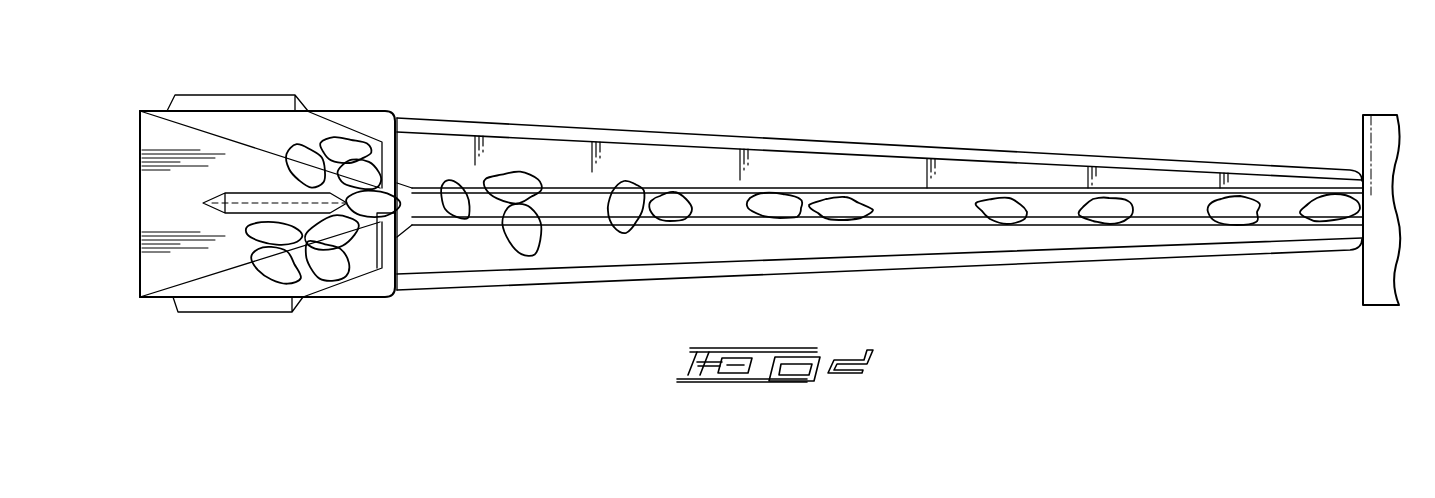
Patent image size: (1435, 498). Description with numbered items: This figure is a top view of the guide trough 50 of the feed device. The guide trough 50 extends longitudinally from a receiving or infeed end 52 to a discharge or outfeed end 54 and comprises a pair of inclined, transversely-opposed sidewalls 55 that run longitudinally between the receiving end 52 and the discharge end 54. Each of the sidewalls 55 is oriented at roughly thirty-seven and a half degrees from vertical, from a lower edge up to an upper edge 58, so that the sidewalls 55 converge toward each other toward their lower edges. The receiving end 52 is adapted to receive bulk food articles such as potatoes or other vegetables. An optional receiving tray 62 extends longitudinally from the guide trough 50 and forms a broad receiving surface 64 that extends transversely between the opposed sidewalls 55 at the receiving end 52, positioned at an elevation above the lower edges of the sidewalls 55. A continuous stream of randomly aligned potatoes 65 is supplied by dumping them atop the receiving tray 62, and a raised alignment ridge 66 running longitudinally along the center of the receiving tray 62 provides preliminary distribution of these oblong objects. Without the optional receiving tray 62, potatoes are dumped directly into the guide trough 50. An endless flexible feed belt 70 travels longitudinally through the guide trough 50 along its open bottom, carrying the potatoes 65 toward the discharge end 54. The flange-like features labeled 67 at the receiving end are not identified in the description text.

The guide trough 50 is at (686, 129).
The receiving end 52 is at (408, 100).
The discharge end 54 is at (1348, 156).
The sidewalls 55 is at (787, 162).
The upper edge 58 is at (1077, 157).
The receiving tray 62 is at (156, 128).
The receiving surface 64 is at (148, 201).
The potatoes 65 is at (340, 147).
The alignment ridge 66 is at (272, 197).
The mounting flange 67 is at (278, 120).
The feed belt 70 is at (563, 203).